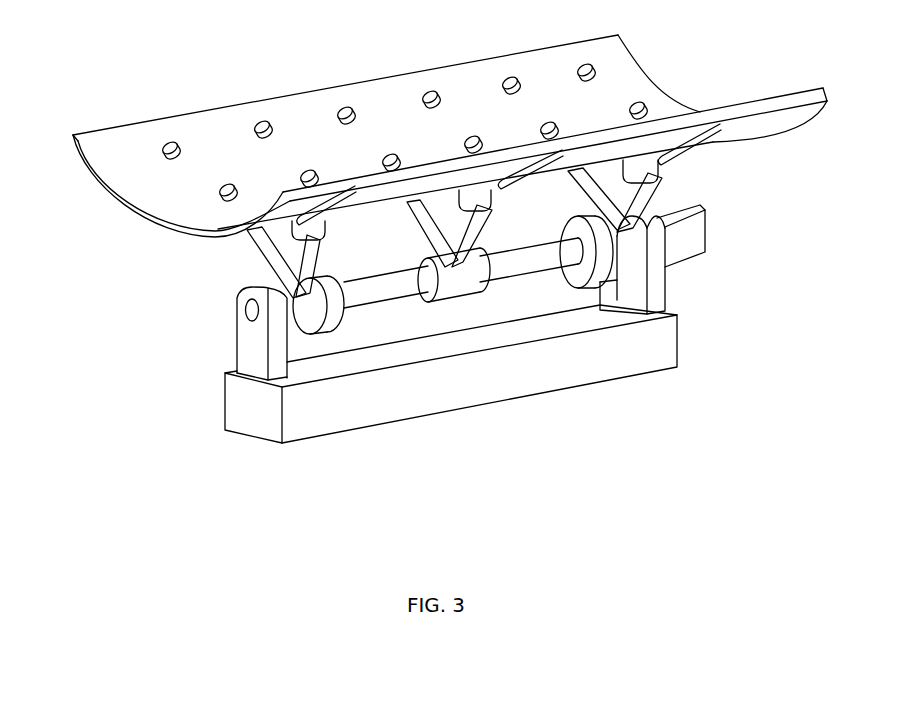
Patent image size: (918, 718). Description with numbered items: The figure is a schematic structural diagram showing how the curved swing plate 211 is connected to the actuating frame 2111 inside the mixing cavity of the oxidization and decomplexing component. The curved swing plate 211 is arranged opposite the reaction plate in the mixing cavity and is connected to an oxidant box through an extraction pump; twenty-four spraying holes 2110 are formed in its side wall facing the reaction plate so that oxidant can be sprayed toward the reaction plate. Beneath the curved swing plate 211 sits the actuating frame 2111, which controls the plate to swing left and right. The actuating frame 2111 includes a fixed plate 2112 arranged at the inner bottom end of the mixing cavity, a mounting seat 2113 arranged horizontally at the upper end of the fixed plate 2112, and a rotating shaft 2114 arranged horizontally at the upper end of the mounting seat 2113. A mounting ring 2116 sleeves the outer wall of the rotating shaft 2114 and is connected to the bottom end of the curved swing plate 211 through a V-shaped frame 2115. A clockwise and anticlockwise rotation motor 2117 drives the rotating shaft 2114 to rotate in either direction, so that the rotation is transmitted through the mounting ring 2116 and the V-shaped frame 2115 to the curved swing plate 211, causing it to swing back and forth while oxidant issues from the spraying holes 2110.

The curved swing plate 211 is at (124, 137).
The spraying holes 2110 is at (180, 143).
The actuating frame 2111 is at (245, 310).
The fixed plate 2112 is at (363, 417).
The mounting seat 2113 is at (260, 357).
The rotating shaft 2114 is at (386, 300).
The V-shaped frame 2115 is at (253, 260).
The mounting ring 2116 is at (312, 336).
The clockwise and anticlockwise rotation motor 2117 is at (687, 230).